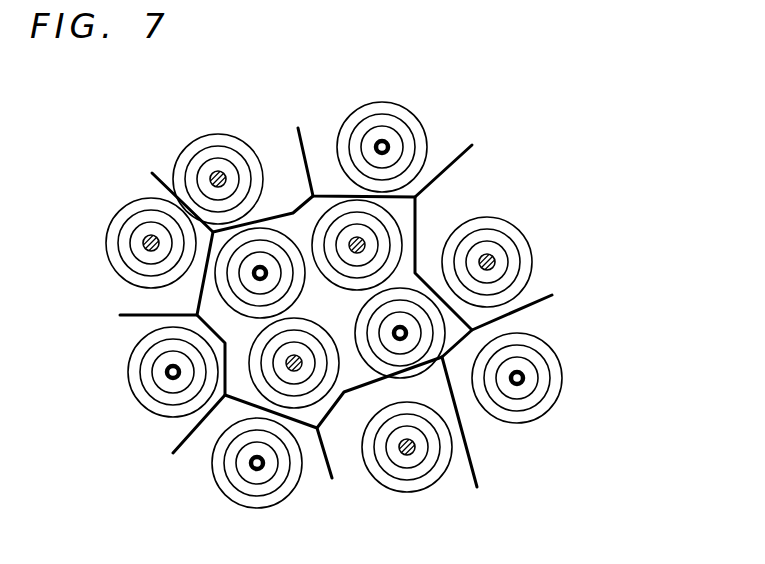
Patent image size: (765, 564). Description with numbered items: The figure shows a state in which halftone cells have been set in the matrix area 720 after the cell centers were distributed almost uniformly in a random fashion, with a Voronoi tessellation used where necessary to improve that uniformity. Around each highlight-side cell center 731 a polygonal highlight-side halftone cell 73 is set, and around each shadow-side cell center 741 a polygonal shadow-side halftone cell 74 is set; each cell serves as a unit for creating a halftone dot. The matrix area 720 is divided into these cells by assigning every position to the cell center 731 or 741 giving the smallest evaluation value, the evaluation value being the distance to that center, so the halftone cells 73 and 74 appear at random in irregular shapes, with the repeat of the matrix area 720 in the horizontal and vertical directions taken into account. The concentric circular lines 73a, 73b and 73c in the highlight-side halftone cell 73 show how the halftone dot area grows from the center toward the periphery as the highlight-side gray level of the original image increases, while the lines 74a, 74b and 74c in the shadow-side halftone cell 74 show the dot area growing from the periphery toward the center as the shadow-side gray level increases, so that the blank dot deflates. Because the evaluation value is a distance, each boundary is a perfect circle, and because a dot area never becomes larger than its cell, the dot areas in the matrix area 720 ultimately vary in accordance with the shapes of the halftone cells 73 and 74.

The matrix area 720 is at (288, 109).
The highlight-side halftone cell 73 is at (218, 247).
The line of halftone dot area boundary in highlight-side halftone cell 73a is at (248, 256).
The line of halftone dot area boundary in highlight-side halftone cell 73b is at (241, 246).
The line of halftone dot area boundary in highlight-side halftone cell 73c is at (234, 236).
The highlight-side cell center 731 is at (252, 274).
The shadow-side halftone cell 74 is at (406, 216).
The line of halftone dot area boundary in shadow-side halftone cell 74a is at (243, 477).
The line of halftone dot area boundary in shadow-side halftone cell 74b is at (272, 388).
The line of halftone dot area boundary in shadow-side halftone cell 74c is at (262, 396).
The shadow-side cell center 741 is at (367, 245).